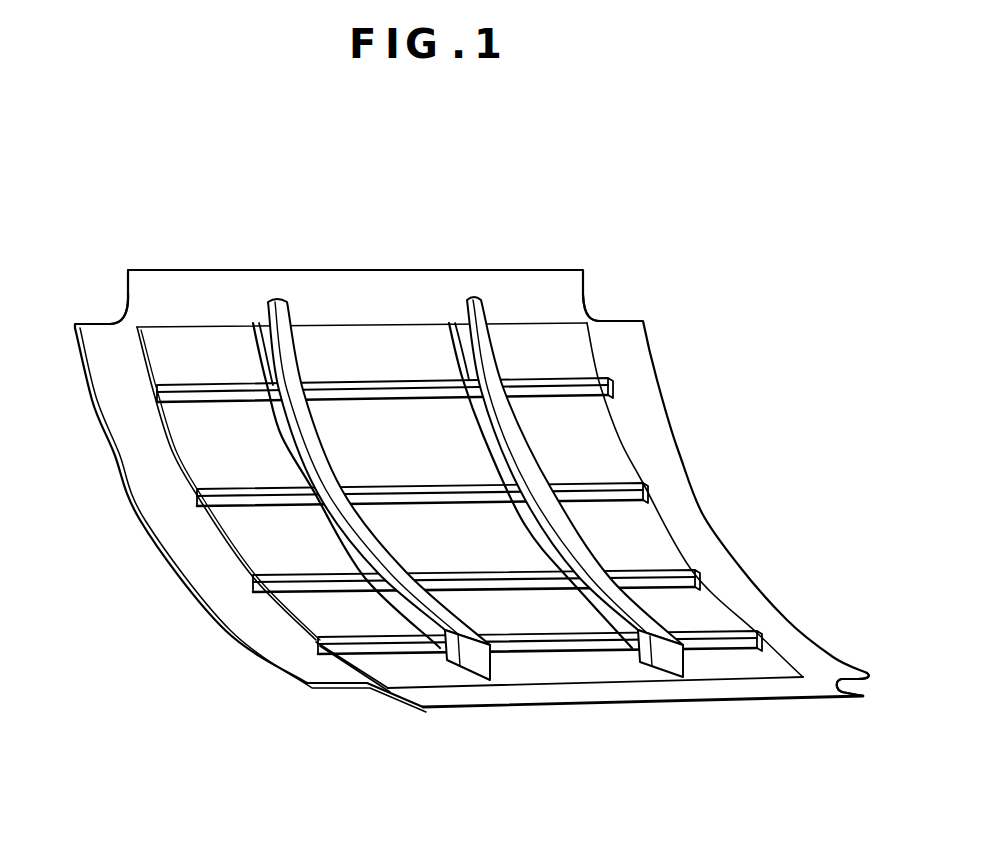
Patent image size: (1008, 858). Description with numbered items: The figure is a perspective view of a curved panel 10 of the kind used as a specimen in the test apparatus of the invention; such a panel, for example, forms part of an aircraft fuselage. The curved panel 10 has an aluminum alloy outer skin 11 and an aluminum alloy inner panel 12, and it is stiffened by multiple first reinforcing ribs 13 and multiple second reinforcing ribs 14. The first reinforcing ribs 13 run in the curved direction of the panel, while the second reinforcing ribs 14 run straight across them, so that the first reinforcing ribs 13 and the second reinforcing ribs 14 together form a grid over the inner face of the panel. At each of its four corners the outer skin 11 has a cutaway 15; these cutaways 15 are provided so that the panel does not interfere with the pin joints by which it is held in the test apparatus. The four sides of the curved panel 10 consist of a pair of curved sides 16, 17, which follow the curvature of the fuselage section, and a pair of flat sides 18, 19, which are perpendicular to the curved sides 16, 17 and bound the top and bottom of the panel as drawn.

The curved panel 10 is at (656, 212).
The outer skin 11 is at (353, 268).
The inner panel 12 is at (226, 554).
The first reinforcing ribs 13 is at (277, 300).
The second reinforcing ribs 14 is at (612, 377).
The cutaways 15 is at (119, 322).
The curved side 16 is at (160, 509).
The curved side 17 is at (693, 514).
The flat side 18 is at (404, 296).
The flat side 19 is at (562, 694).